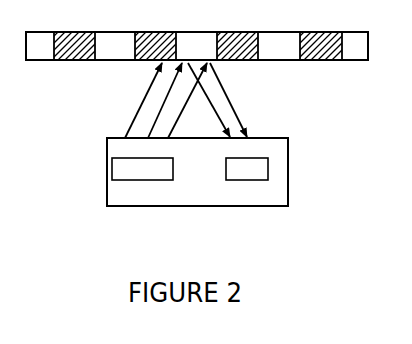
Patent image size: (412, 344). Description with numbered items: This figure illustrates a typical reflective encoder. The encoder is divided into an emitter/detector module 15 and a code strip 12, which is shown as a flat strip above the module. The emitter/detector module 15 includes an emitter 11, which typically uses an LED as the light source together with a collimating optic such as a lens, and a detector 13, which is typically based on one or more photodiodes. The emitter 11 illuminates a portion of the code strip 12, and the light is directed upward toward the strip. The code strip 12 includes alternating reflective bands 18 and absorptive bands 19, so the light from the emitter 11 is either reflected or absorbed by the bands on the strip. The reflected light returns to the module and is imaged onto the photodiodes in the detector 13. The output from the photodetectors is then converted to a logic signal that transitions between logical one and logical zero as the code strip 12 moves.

The emitter 11 is at (152, 177).
The code strip 12 is at (352, 61).
The detector 13 is at (233, 177).
The emitter/detector module 15 is at (290, 167).
The reflective bands 18 is at (118, 57).
The absorptive bands 19 is at (71, 60).